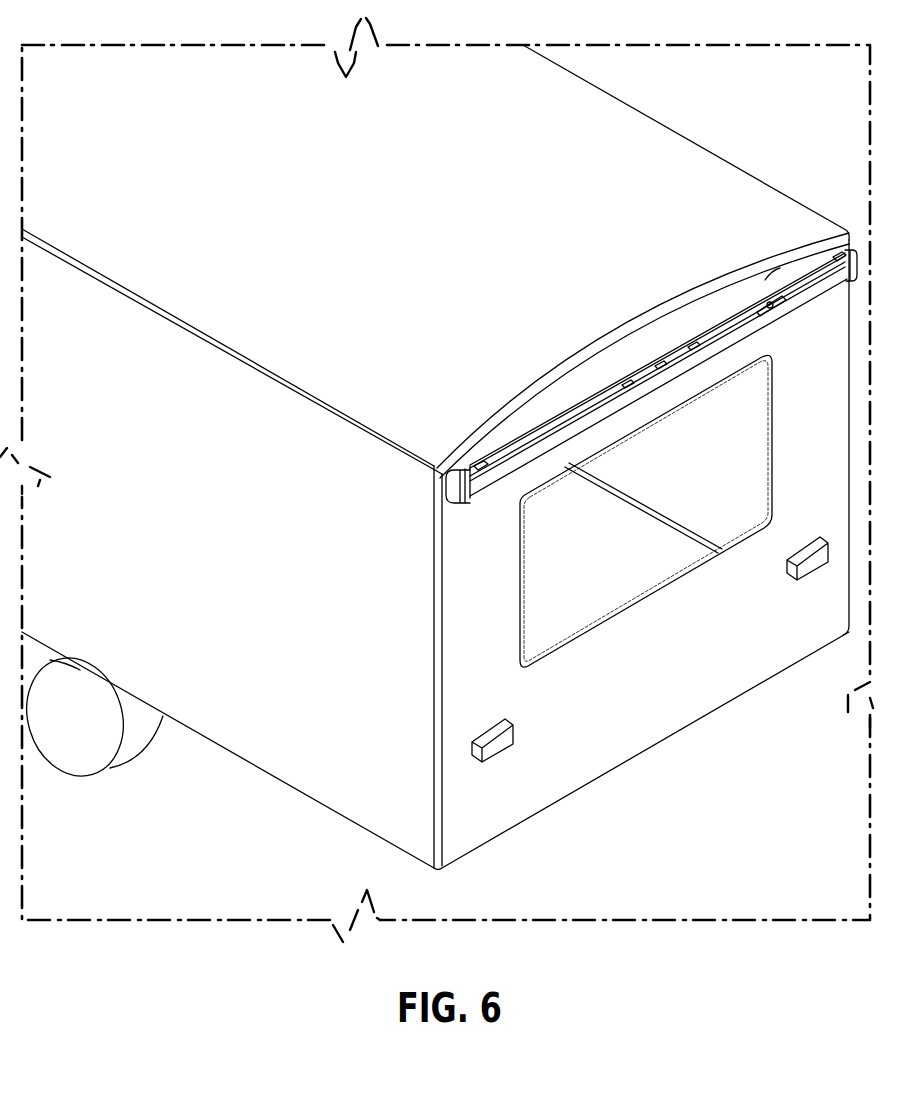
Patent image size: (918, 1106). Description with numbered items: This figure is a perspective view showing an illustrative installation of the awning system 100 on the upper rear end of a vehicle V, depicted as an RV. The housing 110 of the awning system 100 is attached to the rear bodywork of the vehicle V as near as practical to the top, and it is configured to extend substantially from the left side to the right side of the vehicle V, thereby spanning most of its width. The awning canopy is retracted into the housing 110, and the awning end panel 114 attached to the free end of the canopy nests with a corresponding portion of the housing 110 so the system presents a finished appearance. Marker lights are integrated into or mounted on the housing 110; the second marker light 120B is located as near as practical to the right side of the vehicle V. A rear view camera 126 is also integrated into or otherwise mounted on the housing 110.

The awning system 100 is at (870, 252).
The housing 110 is at (830, 243).
The awning end panel 114 is at (843, 279).
The second marker light 120B is at (848, 247).
The rear view camera 126 is at (772, 277).
The vehicle V is at (830, 430).